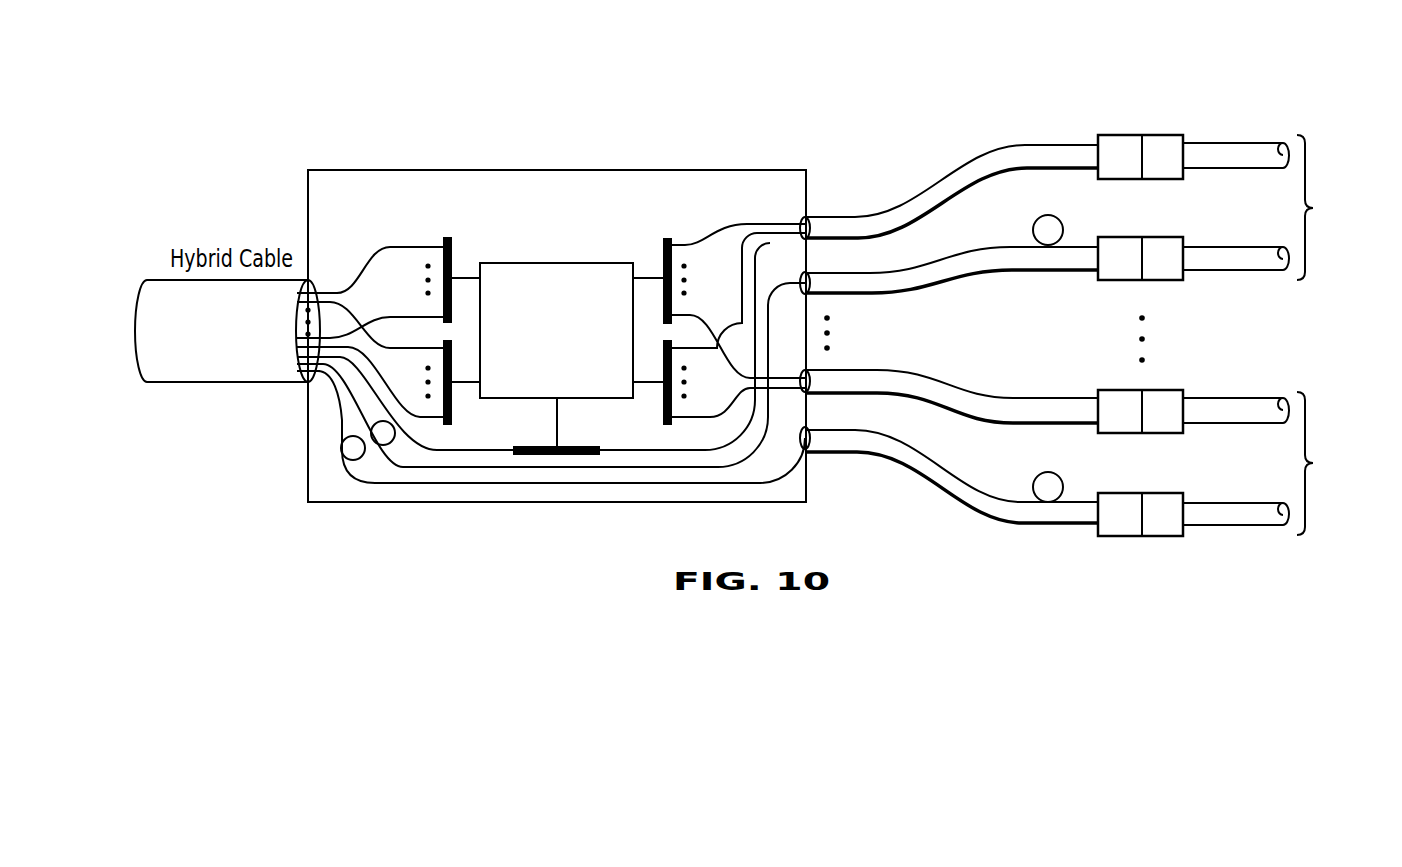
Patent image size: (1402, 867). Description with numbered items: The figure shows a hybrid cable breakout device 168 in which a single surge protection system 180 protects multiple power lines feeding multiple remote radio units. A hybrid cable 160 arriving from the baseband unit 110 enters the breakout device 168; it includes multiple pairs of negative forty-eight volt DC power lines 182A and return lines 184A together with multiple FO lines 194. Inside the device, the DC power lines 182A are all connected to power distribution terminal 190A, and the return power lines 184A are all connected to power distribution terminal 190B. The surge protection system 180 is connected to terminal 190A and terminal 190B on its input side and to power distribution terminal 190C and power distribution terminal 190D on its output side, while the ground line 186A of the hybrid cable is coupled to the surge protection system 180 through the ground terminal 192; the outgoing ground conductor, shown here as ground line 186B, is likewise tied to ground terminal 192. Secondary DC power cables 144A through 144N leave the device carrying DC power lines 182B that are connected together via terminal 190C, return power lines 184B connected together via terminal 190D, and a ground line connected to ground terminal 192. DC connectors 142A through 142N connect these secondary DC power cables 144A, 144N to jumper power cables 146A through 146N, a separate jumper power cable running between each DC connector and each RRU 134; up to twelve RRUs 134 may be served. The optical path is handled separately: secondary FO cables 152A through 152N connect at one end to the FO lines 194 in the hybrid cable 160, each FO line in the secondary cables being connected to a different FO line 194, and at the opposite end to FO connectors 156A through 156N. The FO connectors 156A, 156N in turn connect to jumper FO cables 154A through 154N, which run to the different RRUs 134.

The baseband unit (BBU) 110 is at (104, 329).
The RRU 134 is at (1344, 335).
The DC connector 142A is at (1118, 180).
The DC connector 142N is at (1118, 434).
The secondary DC power cable 144A is at (953, 168).
The secondary DC power cable 144N is at (1006, 397).
The jumper power cable 146A is at (1250, 142).
The jumper power cable 146N is at (1250, 397).
The secondary FO cable 152A is at (944, 285).
The secondary FO cable 152N is at (934, 488).
The jumper FO cable 154A is at (1250, 246).
The jumper FO cable 154N is at (1250, 502).
The FO connector 156A is at (1118, 281).
The FO connector 156N is at (1118, 537).
The hybrid cable 160 is at (545, 83).
The breakout device 168 is at (400, 169).
The surge protection system 180 is at (592, 262).
The −48 VDC power line 182A is at (333, 290).
The −48 VDC power line 182B is at (708, 236).
The return line 184A is at (300, 355).
The return power line 184B is at (770, 243).
The ground line 186A is at (487, 452).
The fiber routing segment 186B is at (720, 453).
The power distribution terminal 190A is at (446, 236).
The power distribution terminal 190B is at (447, 426).
The power distribution terminal 190C is at (667, 237).
The power distribution terminal 190D is at (661, 414).
The ground terminal 192 is at (572, 457).
The FO line 194 is at (365, 486).